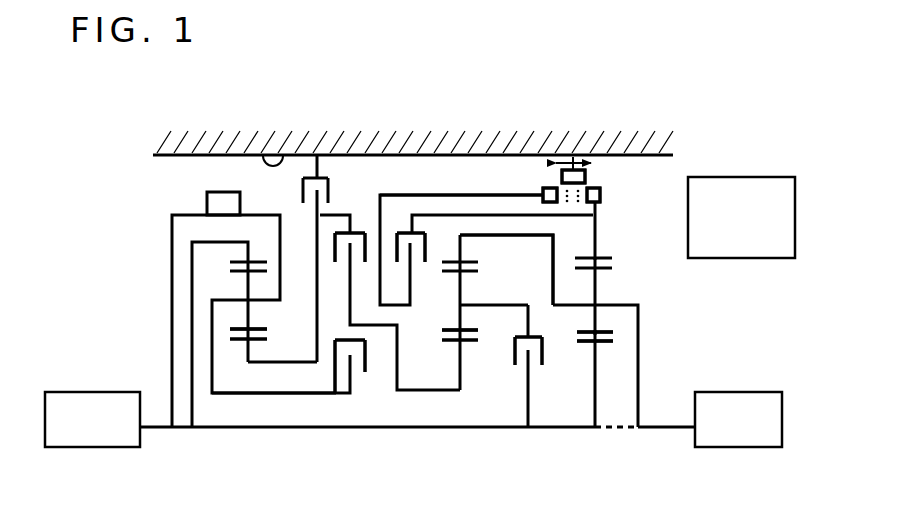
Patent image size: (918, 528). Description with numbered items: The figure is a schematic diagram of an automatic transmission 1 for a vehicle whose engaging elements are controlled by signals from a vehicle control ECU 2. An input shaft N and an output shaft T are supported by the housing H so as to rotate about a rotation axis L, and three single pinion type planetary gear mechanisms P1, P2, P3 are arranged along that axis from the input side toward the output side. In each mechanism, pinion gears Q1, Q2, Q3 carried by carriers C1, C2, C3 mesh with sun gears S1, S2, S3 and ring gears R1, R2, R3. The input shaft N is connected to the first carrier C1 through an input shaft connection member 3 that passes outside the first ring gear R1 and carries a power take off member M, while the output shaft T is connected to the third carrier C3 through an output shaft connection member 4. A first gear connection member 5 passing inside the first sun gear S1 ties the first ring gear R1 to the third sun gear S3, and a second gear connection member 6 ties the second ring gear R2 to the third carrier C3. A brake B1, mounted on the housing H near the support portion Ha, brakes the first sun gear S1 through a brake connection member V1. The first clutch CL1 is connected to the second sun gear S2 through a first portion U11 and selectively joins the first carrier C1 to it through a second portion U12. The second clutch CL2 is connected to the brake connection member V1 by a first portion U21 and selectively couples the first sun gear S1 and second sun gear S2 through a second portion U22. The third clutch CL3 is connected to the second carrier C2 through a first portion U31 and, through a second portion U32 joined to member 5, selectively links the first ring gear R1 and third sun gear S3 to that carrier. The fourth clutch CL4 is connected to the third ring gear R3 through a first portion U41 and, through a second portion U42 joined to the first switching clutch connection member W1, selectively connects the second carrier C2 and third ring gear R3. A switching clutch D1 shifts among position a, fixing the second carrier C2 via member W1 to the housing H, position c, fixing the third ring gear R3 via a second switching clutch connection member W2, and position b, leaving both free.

The automatic transmission 1 is at (618, 117).
The vehicle control ECU 2 is at (731, 177).
The input shaft connection member 3 is at (163, 428).
The output shaft connection member 4 is at (655, 428).
The first gear connection member 5 is at (439, 428).
The second gear connection member 6 is at (547, 237).
The housing H is at (397, 136).
The housing support portion Ha is at (289, 151).
The power take off member M is at (220, 192).
The brake B1 is at (296, 183).
The first portion of second-clutch connection member U21 is at (333, 213).
The second portion of second-clutch connection member U22 is at (354, 274).
The second clutch CL2 is at (381, 212).
The first portion of fourth-clutch connection member U41 is at (409, 215).
The fourth clutch CL4 is at (434, 231).
The second portion of fourth-clutch connection member U42 is at (413, 268).
The first switching clutch connection member W1 is at (522, 194).
The second switching clutch connection member W2 is at (597, 206).
The position a is at (549, 188).
The position b is at (573, 157).
The position c is at (597, 188).
The switching clutch D1 is at (606, 193).
The first ring gear R1 is at (259, 262).
The first pinion gear Q1 is at (246, 288).
The brake connection member V1 is at (316, 254).
The first carrier C1 is at (257, 306).
The first sun gear S1 is at (248, 347).
The first planetary gear mechanism P1 is at (263, 352).
The second portion of first-clutch connection member U12 is at (343, 378).
The first portion of first-clutch connection member U11 is at (363, 351).
The first clutch CL1 is at (345, 375).
The second ring gear R2 is at (468, 262).
The second pinion gear Q2 is at (461, 290).
The second carrier C2 is at (450, 312).
The second sun gear S2 is at (459, 363).
The second planetary gear mechanism P2 is at (470, 350).
The first portion of third-clutch connection member U31 is at (530, 320).
The second portion of third-clutch connection member U32 is at (527, 370).
The third clutch CL3 is at (546, 353).
The third ring gear R3 is at (603, 258).
The third carrier C3 is at (600, 304).
The third pinion gear Q3 is at (597, 318).
The third sun gear S3 is at (598, 364).
The third planetary gear mechanism P3 is at (588, 350).
The input shaft N is at (89, 448).
The output shaft T is at (742, 448).
The rotation axis L is at (178, 428).